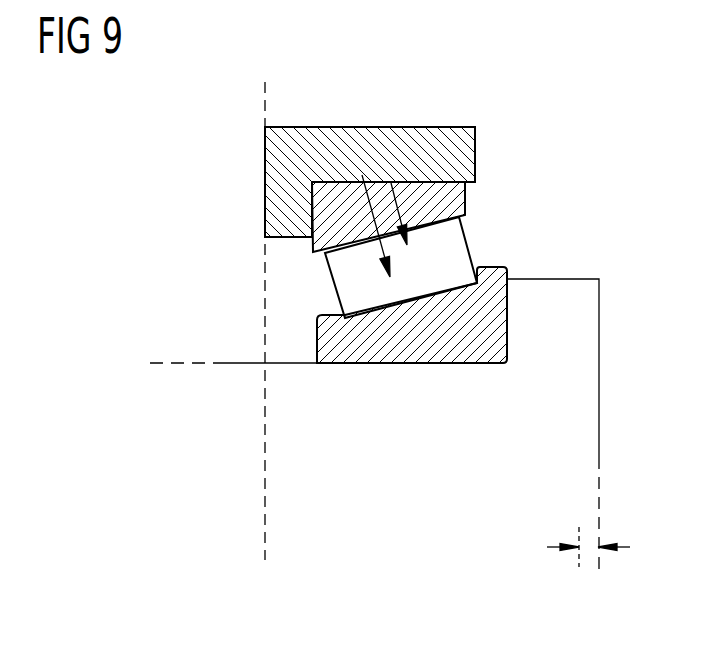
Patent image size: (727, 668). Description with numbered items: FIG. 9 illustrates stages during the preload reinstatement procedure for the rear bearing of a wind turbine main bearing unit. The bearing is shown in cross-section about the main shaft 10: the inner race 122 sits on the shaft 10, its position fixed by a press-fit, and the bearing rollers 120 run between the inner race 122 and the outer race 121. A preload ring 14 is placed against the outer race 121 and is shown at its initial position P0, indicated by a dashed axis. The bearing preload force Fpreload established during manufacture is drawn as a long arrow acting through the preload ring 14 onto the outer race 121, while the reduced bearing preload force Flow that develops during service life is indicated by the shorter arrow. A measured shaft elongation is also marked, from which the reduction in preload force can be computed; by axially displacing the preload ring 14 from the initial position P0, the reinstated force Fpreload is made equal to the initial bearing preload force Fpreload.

The main shaft 10 is at (230, 370).
The preload ring 14 is at (308, 135).
The bearing rollers 120 is at (460, 252).
The outer race 121 is at (467, 193).
The inner race 122 is at (316, 332).
The initial position P0 is at (265, 540).
The bearing preload force Fpreload is at (362, 200).
The reduced bearing preload force Flow is at (391, 183).